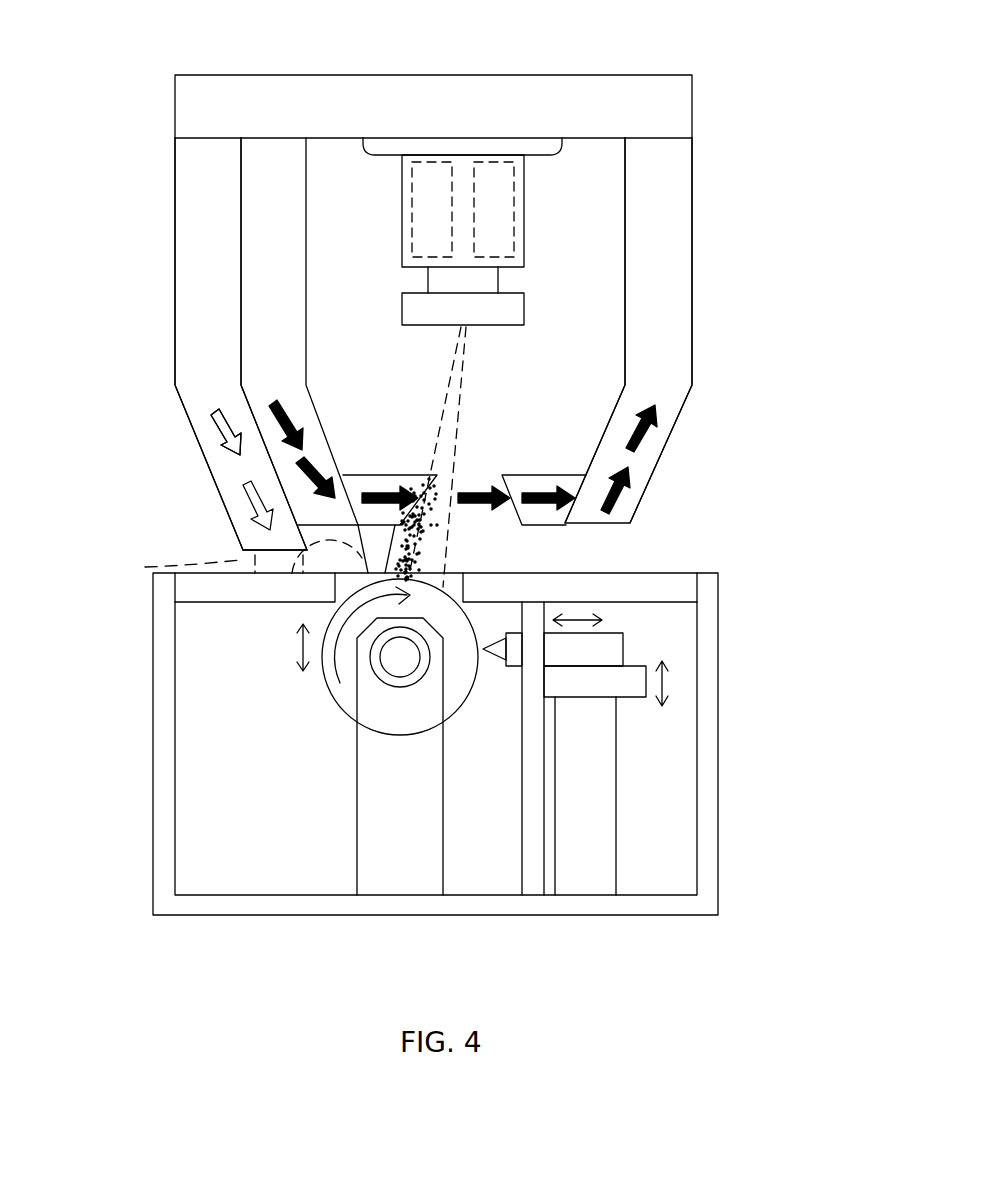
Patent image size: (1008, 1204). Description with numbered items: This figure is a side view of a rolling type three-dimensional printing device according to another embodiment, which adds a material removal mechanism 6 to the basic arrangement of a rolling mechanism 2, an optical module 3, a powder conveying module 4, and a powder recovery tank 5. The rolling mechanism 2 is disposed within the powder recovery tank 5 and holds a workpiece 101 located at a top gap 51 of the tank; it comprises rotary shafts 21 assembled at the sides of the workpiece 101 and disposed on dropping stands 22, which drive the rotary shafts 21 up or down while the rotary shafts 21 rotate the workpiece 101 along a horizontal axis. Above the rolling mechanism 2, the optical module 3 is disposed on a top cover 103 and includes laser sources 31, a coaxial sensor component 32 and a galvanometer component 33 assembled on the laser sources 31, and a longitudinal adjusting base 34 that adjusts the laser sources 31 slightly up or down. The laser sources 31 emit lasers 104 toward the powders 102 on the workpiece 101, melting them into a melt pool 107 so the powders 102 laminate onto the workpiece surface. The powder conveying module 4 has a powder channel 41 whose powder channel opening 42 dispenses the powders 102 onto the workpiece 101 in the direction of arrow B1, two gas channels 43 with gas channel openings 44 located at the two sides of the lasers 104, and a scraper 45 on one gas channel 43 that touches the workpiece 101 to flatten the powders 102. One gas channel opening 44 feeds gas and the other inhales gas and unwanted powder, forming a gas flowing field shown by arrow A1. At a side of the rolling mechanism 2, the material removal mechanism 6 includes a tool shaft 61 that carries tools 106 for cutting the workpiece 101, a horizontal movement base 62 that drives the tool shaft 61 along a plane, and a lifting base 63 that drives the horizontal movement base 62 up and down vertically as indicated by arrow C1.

The top cover 103 is at (290, 75).
The powder conveying module 4 is at (163, 162).
The powder channel 41 is at (183, 200).
The gas channels 43 is at (245, 302).
The powder channel opening 42 is at (265, 553).
The arrow B1 is at (235, 505).
The arrow A1 is at (540, 475).
The optical module 3 is at (584, 228).
The longitudinal adjusting base 34 is at (537, 153).
The laser sources 31 is at (525, 180).
The coaxial sensor component 32 is at (514, 213).
The galvanometer component 33 is at (500, 283).
The lasers 104 is at (464, 352).
The gas channel openings 44 is at (430, 475).
The scraper 45 is at (367, 570).
The powder recovery tank 5 is at (726, 572).
The top gap 51 is at (455, 573).
The melt pool 107 is at (440, 574).
The powders 102 is at (145, 567).
The workpiece 101 is at (303, 680).
The rolling mechanism 2 is at (342, 737).
The rotary shafts 21 is at (385, 665).
The dropping stands 22 is at (357, 770).
The material removal mechanism 6 is at (699, 748).
The tool shaft 61 is at (623, 633).
The horizontal movement base 62 is at (646, 666).
The lifting base 63 is at (616, 750).
The tools 106 is at (492, 660).
The arrow C1 is at (662, 705).